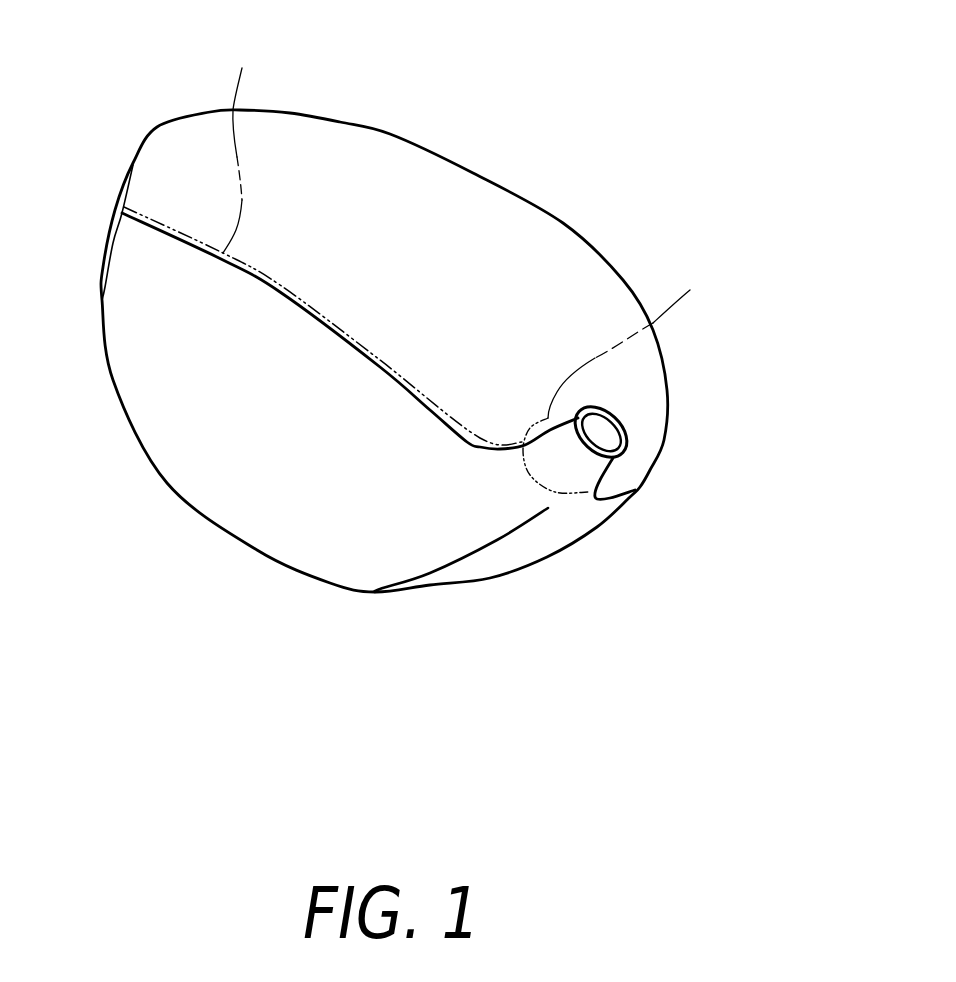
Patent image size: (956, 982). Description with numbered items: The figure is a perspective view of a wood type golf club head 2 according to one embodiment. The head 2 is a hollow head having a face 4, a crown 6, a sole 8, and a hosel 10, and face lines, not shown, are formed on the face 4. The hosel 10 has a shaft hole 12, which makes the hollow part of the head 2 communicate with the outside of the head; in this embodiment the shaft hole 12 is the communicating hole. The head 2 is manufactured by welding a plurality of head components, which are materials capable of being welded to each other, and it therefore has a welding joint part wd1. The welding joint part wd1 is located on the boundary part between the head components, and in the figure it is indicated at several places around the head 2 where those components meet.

The head 2 is at (542, 83).
The face 4 is at (280, 520).
The crown 6 is at (368, 172).
The sole 8 is at (377, 598).
The hosel 10 is at (575, 503).
The shaft hole 12 is at (607, 435).
The welding joint part wd1 is at (103, 522).